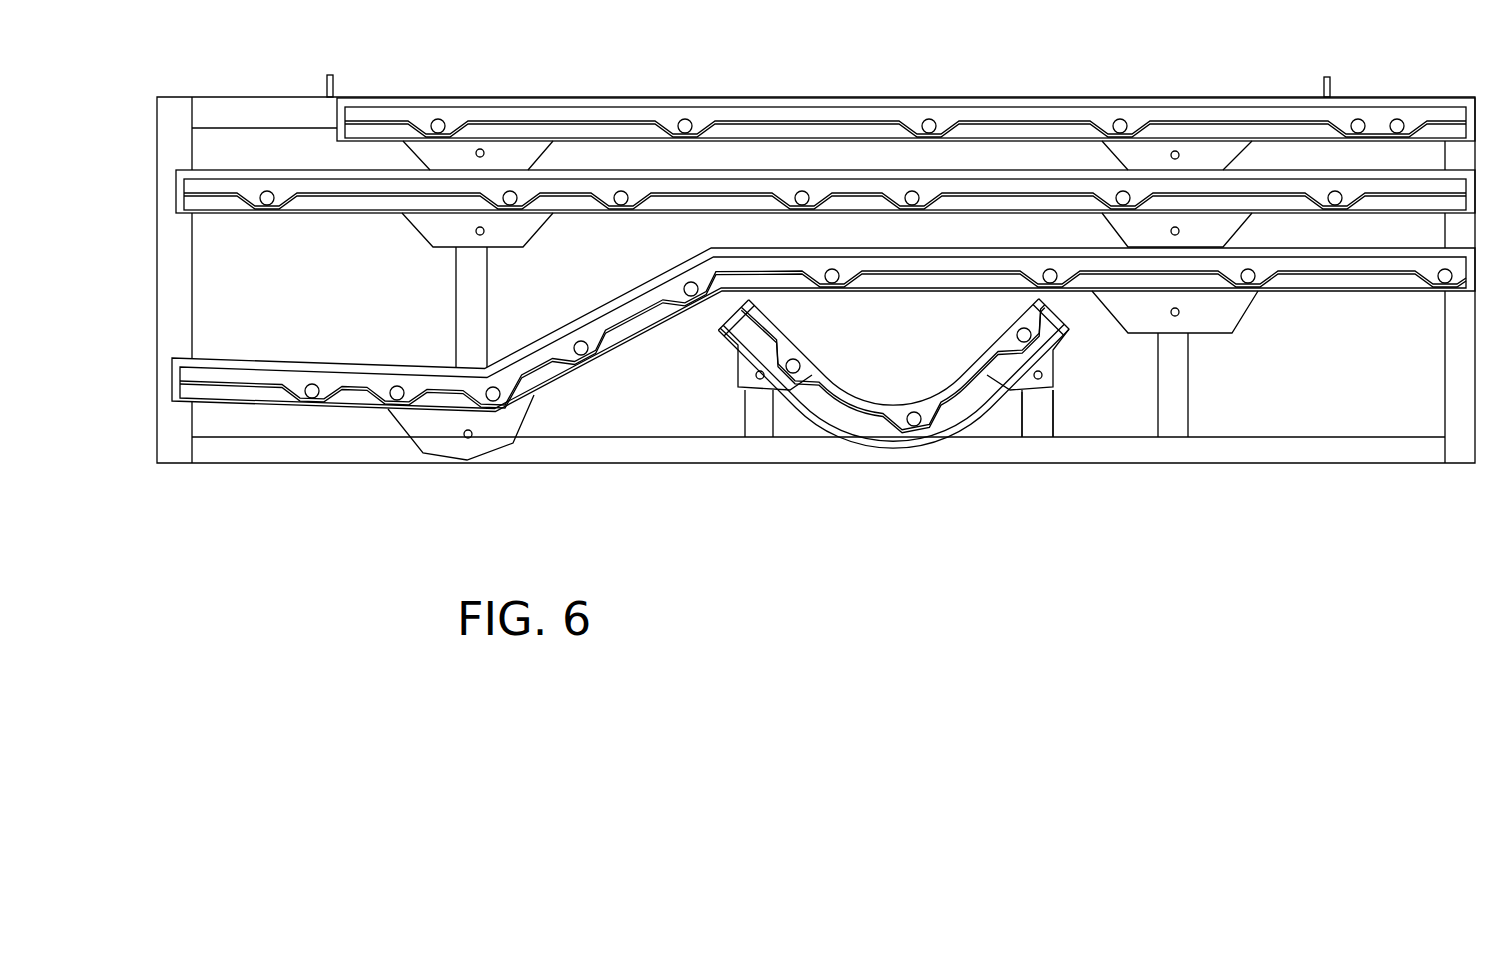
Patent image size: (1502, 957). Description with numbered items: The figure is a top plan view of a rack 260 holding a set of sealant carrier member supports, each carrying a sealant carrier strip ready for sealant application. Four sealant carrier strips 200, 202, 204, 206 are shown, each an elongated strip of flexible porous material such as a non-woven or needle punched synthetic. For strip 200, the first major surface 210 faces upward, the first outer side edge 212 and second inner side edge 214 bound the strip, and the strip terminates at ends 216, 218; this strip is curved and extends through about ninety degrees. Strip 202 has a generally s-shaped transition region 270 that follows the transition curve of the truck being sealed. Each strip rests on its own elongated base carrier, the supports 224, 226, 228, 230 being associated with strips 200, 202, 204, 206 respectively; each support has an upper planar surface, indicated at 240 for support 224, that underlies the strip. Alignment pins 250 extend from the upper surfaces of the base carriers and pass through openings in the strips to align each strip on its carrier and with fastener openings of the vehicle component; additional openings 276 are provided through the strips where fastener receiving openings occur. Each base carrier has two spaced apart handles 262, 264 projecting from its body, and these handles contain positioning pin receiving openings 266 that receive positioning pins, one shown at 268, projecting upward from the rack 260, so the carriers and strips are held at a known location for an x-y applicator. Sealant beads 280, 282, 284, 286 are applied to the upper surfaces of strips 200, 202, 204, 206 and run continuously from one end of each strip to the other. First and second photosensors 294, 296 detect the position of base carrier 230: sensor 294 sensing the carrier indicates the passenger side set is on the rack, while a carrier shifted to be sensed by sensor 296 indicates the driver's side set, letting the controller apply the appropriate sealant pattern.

The sealant carrier strip 200 is at (902, 437).
The sealant carrier strip 202 is at (823, 314).
The sealant carrier strip 204 is at (825, 154).
The sealant carrier strip 206 is at (906, 81).
The first major surface 210 is at (946, 430).
The first outer side edge 212 is at (985, 415).
The second inner side edge 214 is at (962, 390).
The end 216 is at (1060, 318).
The end 218 is at (740, 321).
The support 224 is at (828, 428).
The support 226 is at (852, 300).
The support 228 is at (731, 168).
The support 230 is at (932, 94).
The upper planar surface 240 is at (910, 447).
The alignment pins 250 is at (1402, 122).
The rack 260 is at (355, 472).
The handle 262 is at (442, 444).
The handle 264 is at (427, 224).
The positioning pin receiving openings 266 is at (473, 437).
The positioning pin 268 is at (1173, 151).
The s-shaped transition region 270 is at (528, 337).
The additional openings 276 is at (1118, 122).
The sealant bead 280 is at (1008, 398).
The sealant bead 282 is at (968, 276).
The sealant bead 284 is at (993, 190).
The sealant bead 286 is at (1223, 127).
The first photosensor 294 is at (1331, 85).
The second photosensor 296 is at (334, 84).